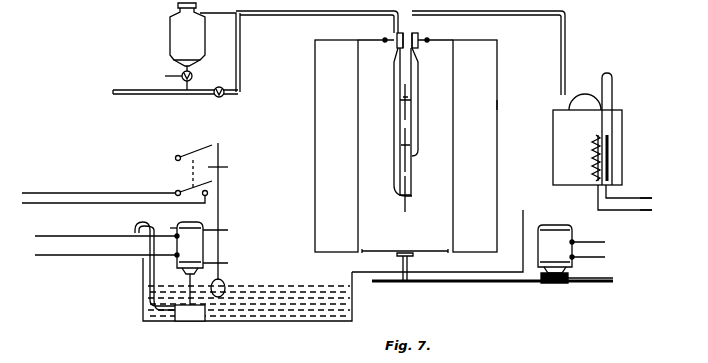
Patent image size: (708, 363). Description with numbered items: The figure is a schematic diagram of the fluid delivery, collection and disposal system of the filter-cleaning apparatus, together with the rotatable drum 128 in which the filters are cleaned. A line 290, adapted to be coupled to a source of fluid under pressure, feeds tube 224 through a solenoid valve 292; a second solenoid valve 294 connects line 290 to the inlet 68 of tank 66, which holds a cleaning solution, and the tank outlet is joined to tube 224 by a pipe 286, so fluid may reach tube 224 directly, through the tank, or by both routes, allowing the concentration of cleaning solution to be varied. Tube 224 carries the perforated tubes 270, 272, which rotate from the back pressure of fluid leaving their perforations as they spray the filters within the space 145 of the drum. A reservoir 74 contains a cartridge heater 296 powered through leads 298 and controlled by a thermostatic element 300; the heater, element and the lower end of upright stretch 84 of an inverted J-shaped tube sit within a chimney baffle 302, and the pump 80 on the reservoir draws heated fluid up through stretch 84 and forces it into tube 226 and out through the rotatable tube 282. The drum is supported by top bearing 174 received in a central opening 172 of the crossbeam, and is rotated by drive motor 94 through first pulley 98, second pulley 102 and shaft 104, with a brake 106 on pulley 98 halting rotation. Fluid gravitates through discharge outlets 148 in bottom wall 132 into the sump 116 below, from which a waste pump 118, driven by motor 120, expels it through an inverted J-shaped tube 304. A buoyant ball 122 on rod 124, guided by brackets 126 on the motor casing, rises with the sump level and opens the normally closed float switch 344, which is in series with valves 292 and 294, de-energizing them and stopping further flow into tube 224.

The tank 66 is at (170, 36).
The inlet 68 is at (193, 73).
The reservoir 74 is at (622, 121).
The fluid pump 80 is at (581, 110).
The upright stretch of tube 84 is at (612, 100).
The electric drive motor 94 is at (556, 228).
The first pulley 98 is at (550, 284).
The second pulley 102 is at (432, 284).
The shaft 104 is at (397, 258).
The brake 106 is at (570, 284).
The sump 116 is at (305, 315).
The waste pump 118 is at (188, 319).
The motor 120 is at (176, 229).
The ball 122 is at (226, 281).
The rod 124 is at (222, 236).
The brackets 126 is at (222, 216).
The drum 128 is at (497, 102).
The bottom wall 132 is at (458, 256).
The space 145 is at (405, 240).
The discharge outlets 148 is at (358, 246).
The central opening 172 is at (410, 263).
The top bearing 174 is at (418, 39).
The tube 224 is at (258, 14).
The tube 226 is at (505, 14).
The perforated tube 270 is at (410, 100).
The perforated tube 272 is at (412, 201).
The tube 282 is at (420, 122).
The pipe 286 is at (208, 17).
The line 290 is at (120, 94).
The solenoid valve 292 is at (223, 97).
The solenoid valve 294 is at (168, 74).
The heater 296 is at (594, 150).
The electrically conducting leads 298 is at (648, 212).
The thermostatic element 300 is at (611, 150).
The chimney baffle 302 is at (597, 168).
The inverted J-shaped tube 304 is at (150, 272).
The float switch 344 is at (228, 153).